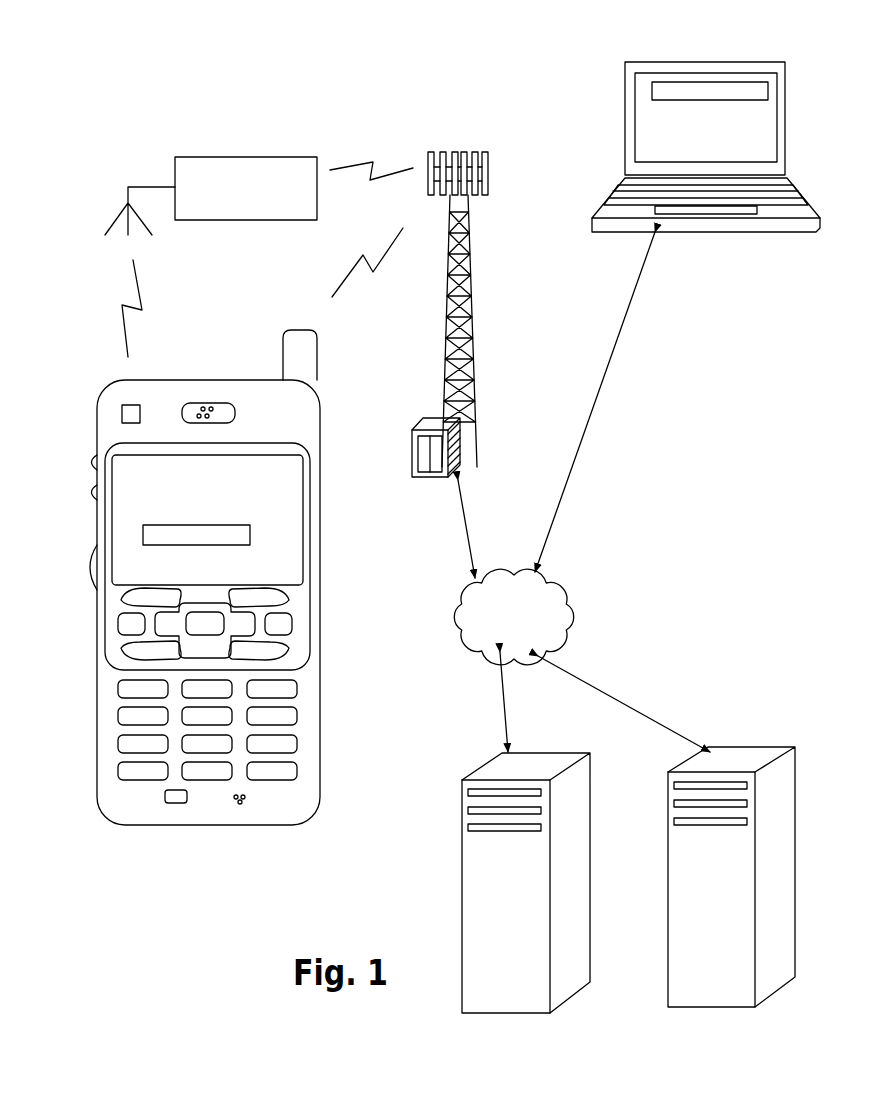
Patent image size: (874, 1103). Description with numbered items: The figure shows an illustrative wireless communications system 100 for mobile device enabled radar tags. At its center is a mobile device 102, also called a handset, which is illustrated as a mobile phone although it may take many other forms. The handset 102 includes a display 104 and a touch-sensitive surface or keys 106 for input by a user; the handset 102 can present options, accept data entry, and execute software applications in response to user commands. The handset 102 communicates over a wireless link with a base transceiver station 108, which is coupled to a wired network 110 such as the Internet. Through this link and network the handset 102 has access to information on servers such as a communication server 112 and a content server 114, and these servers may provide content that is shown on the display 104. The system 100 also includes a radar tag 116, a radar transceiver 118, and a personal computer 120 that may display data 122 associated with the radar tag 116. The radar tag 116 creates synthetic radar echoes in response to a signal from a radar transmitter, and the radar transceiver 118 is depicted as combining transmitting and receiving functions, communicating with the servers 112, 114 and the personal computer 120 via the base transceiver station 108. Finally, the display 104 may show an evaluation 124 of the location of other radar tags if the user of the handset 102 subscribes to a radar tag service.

The wireless communications system 100 is at (418, 66).
The mobile device 102 is at (130, 828).
The display 104 is at (303, 523).
The keys 106 is at (90, 597).
The base transceiver station 108 is at (427, 330).
The wired network 110 is at (470, 635).
The communication server 112 is at (467, 852).
The content server 114 is at (671, 831).
The radar tag 116 is at (122, 414).
The radar transceiver 118 is at (220, 155).
The personal computer 120 is at (626, 168).
The data 122 is at (655, 90).
The evaluation 124 is at (143, 533).